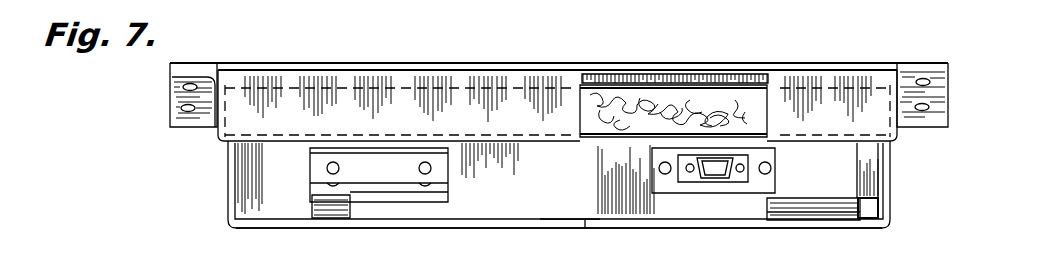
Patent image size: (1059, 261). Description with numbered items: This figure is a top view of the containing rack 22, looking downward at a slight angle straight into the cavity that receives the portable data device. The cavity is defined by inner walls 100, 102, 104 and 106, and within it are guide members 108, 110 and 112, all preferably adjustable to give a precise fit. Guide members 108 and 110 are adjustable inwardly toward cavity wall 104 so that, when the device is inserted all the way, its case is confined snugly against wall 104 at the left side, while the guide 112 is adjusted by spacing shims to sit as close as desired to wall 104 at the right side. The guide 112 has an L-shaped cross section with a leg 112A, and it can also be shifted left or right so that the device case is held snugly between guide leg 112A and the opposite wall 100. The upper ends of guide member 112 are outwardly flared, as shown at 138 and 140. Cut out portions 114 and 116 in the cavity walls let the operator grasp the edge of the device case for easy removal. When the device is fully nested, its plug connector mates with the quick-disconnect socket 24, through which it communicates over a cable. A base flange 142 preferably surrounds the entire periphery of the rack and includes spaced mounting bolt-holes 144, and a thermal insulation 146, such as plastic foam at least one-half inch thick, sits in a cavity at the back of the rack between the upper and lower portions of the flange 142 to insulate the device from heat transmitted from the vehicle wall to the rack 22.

The containing rack 22 is at (193, 205).
The quick-disconnect socket 24 is at (717, 177).
The inner wall 100 is at (233, 178).
The inner wall 102 is at (493, 217).
The inner wall 104 is at (510, 145).
The inner wall 106 is at (878, 205).
The guide member 108 is at (318, 203).
The guide member 110 is at (395, 188).
The guide member 112 is at (817, 190).
The guide leg 112A is at (857, 172).
The cut out portion 114 is at (610, 143).
The cut out portion 116 is at (602, 227).
The outwardly flared upper end 138 is at (800, 213).
The outwardly flared upper end 140 is at (878, 177).
The base flange 142 is at (173, 108).
The mounting bolt-hole 144 is at (192, 83).
The thermal insulation 146 is at (674, 112).